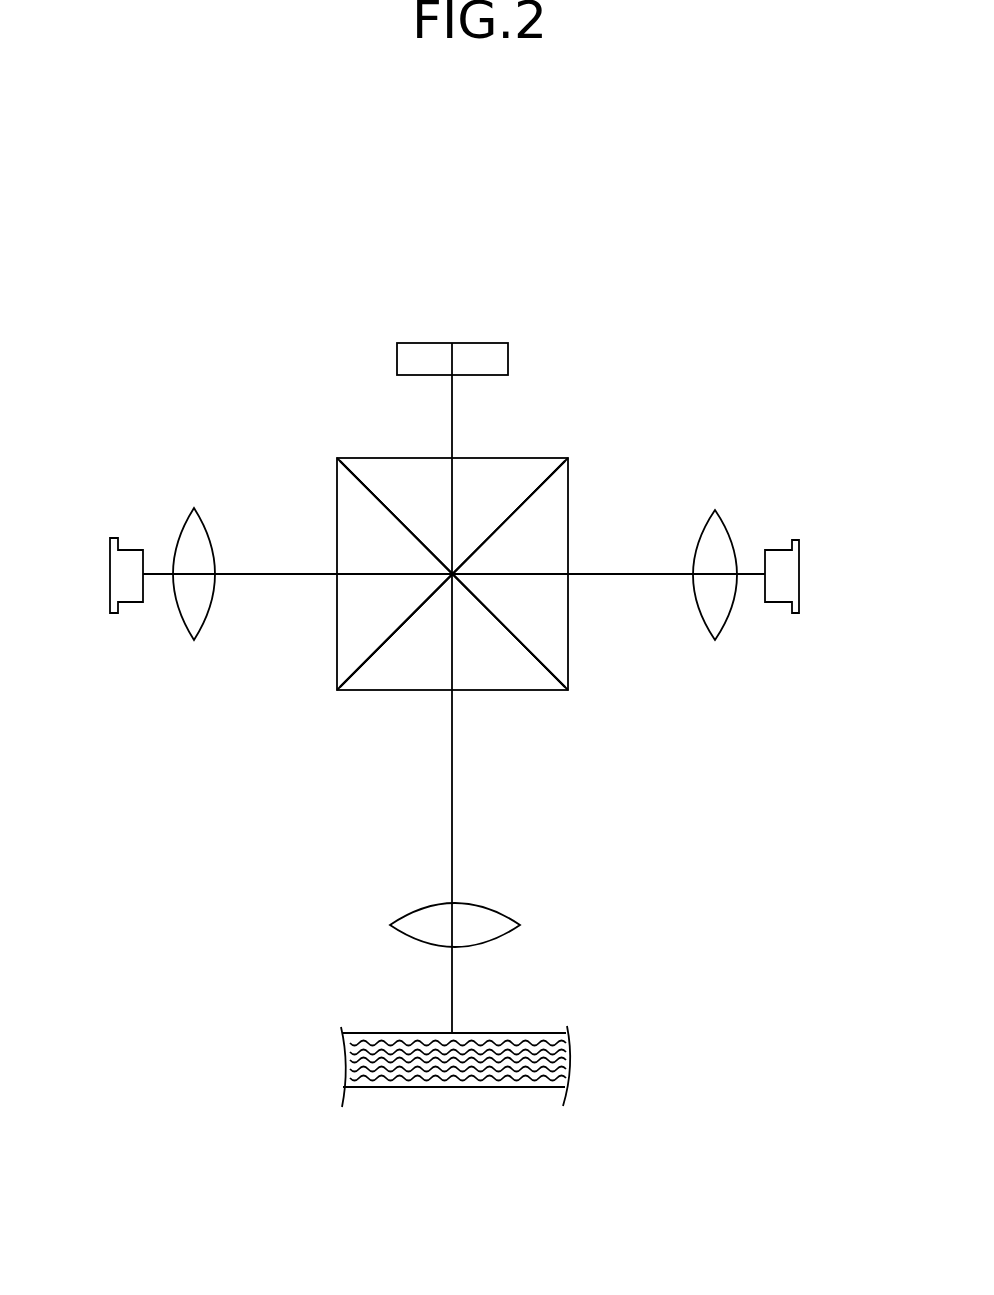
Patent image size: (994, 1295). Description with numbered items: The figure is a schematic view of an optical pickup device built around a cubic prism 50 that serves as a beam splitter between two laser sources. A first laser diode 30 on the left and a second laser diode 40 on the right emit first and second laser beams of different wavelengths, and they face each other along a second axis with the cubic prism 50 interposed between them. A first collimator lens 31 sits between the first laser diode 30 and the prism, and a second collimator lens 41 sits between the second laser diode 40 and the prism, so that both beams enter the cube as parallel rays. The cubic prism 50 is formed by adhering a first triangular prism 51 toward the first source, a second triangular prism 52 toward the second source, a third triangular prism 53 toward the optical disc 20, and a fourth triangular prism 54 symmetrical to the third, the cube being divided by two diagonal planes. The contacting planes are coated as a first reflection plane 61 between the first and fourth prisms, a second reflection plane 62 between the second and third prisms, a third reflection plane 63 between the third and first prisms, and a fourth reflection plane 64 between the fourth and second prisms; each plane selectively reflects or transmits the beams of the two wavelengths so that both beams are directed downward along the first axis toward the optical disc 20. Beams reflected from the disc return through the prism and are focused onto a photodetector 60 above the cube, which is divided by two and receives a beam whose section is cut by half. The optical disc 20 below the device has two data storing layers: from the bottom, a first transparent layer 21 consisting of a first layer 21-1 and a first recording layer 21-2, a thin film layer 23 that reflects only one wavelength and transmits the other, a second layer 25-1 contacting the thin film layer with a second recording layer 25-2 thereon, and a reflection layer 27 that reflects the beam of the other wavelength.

The optical disc 20 is at (571, 1082).
The first transparent layer 21 is at (487, 922).
The first layer 21-1 is at (567, 1030).
The first recording layer 21-2 is at (568, 1045).
The thin film layer 23 is at (570, 1060).
The second layer 25-1 is at (570, 1070).
The second recording layer 25-2 is at (568, 1080).
The reflection layer 27 is at (565, 1083).
The first laser diode 30 is at (118, 527).
The first collimator lens 31 is at (177, 635).
The second laser diode 40 is at (803, 533).
The second collimator lens 41 is at (733, 627).
The cubic prism 50 is at (328, 445).
The first triangular prism 51 is at (353, 522).
The second triangular prism 52 is at (552, 507).
The third triangular prism 53 is at (353, 672).
The fourth triangular prism 54 is at (397, 473).
The photodetector 60 is at (482, 342).
The first reflection plane 61 is at (363, 487).
The second reflection plane 62 is at (533, 653).
The third reflection plane 63 is at (378, 672).
The fourth reflection plane 64 is at (512, 513).